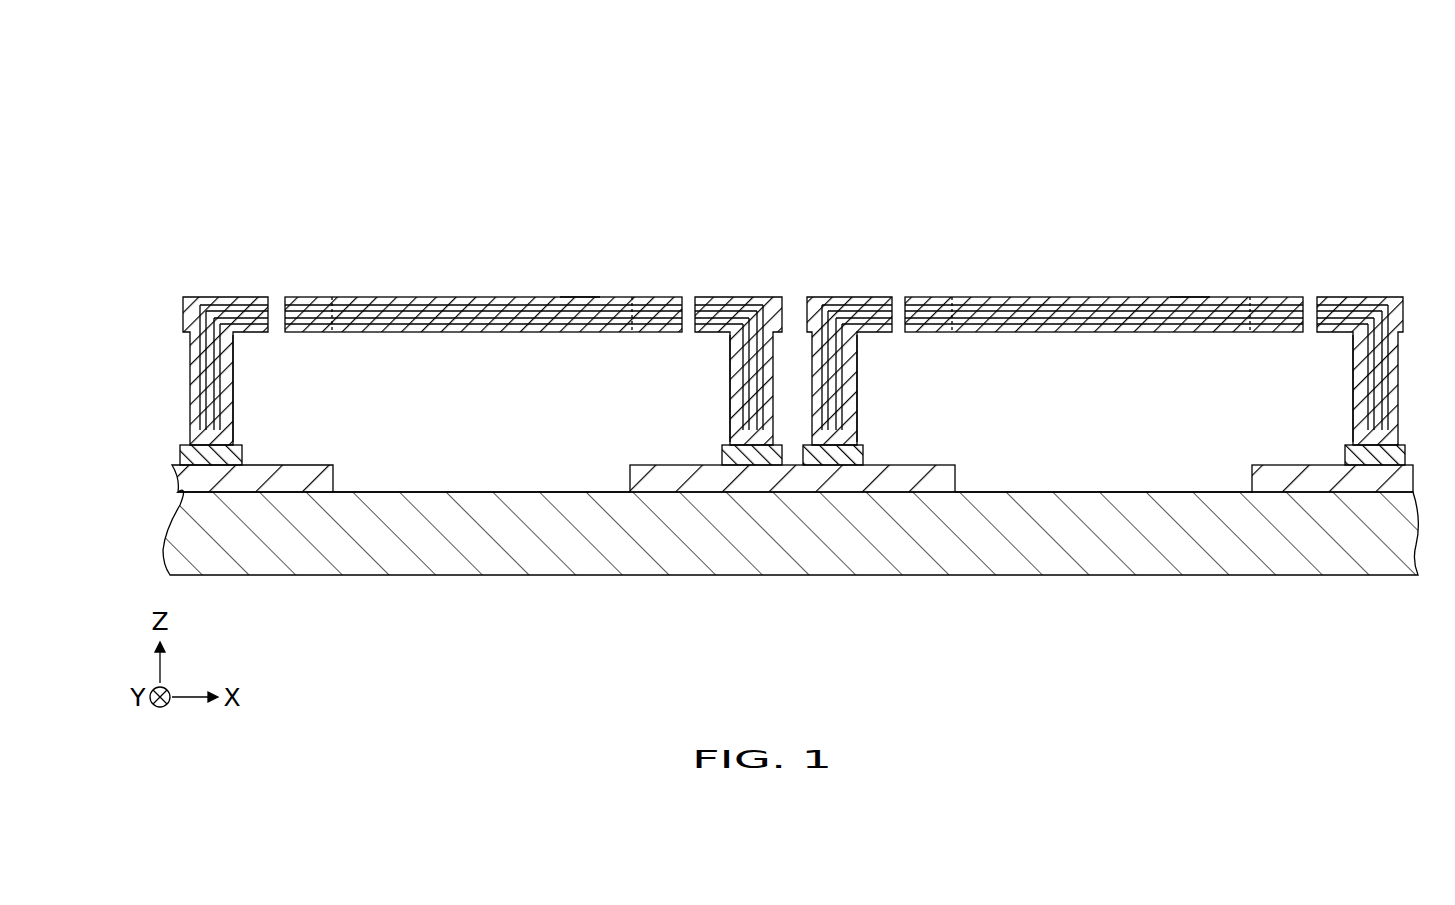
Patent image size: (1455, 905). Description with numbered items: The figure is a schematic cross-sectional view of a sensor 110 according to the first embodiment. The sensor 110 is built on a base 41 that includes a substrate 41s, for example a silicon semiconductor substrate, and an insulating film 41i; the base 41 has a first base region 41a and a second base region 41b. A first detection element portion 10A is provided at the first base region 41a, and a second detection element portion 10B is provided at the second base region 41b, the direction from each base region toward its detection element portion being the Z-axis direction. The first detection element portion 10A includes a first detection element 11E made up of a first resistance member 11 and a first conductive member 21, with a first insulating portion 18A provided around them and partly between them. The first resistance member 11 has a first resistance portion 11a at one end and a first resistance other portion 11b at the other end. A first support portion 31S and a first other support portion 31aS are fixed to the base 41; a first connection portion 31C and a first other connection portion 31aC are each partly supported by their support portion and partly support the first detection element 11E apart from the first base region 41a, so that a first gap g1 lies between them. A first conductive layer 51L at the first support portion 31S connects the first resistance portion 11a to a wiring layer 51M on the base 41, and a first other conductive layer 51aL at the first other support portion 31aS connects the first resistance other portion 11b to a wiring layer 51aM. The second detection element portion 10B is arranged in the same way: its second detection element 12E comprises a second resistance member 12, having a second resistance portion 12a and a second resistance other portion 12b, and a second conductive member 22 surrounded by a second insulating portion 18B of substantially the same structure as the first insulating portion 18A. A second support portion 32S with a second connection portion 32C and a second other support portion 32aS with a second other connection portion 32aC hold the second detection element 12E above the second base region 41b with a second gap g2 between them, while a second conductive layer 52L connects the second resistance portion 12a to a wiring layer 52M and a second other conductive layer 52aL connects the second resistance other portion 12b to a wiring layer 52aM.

The sensor 110 is at (1407, 203).
The first detection element portion 10A is at (722, 233).
The second detection element portion 10B is at (1333, 233).
The first resistance member 11 is at (465, 297).
The first resistance portion 11a is at (347, 297).
The first resistance other portion 11b is at (627, 297).
The first detection element 11E is at (577, 273).
The second resistance member 12 is at (1073, 297).
The second resistance portion 12a is at (963, 297).
The second resistance other portion 12b is at (1243, 297).
The second detection element 12E is at (1185, 272).
The first insulating portion 18A is at (400, 297).
The second insulating portion 18B is at (1005, 297).
The first conductive member 21 is at (532, 297).
The second conductive member 22 is at (1138, 297).
The first support portion 31S is at (224, 297).
The first connection portion 31C is at (308, 297).
The first other support portion 31aS is at (757, 297).
The first other connection portion 31aC is at (664, 297).
The second support portion 32S is at (843, 297).
The second connection portion 32C is at (928, 297).
The second other support portion 32aS is at (1380, 297).
The second other connection portion 32aC is at (1283, 297).
The base 41 is at (328, 625).
The substrate 41s is at (243, 528).
The insulating film 41i is at (332, 474).
The first base region 41a is at (508, 548).
The second base region 41b is at (1128, 548).
The first conductive layer 51L is at (215, 386).
The wiring layer 51M is at (195, 462).
The first other conductive layer 51aL is at (758, 390).
The wiring layer 51aM is at (738, 462).
The second conductive layer 52L is at (828, 390).
The wiring layer 52M is at (848, 462).
The second other conductive layer 52aL is at (1383, 390).
The wiring layer 52aM is at (1362, 462).
The first gap g1 is at (450, 463).
The second gap g2 is at (1075, 463).